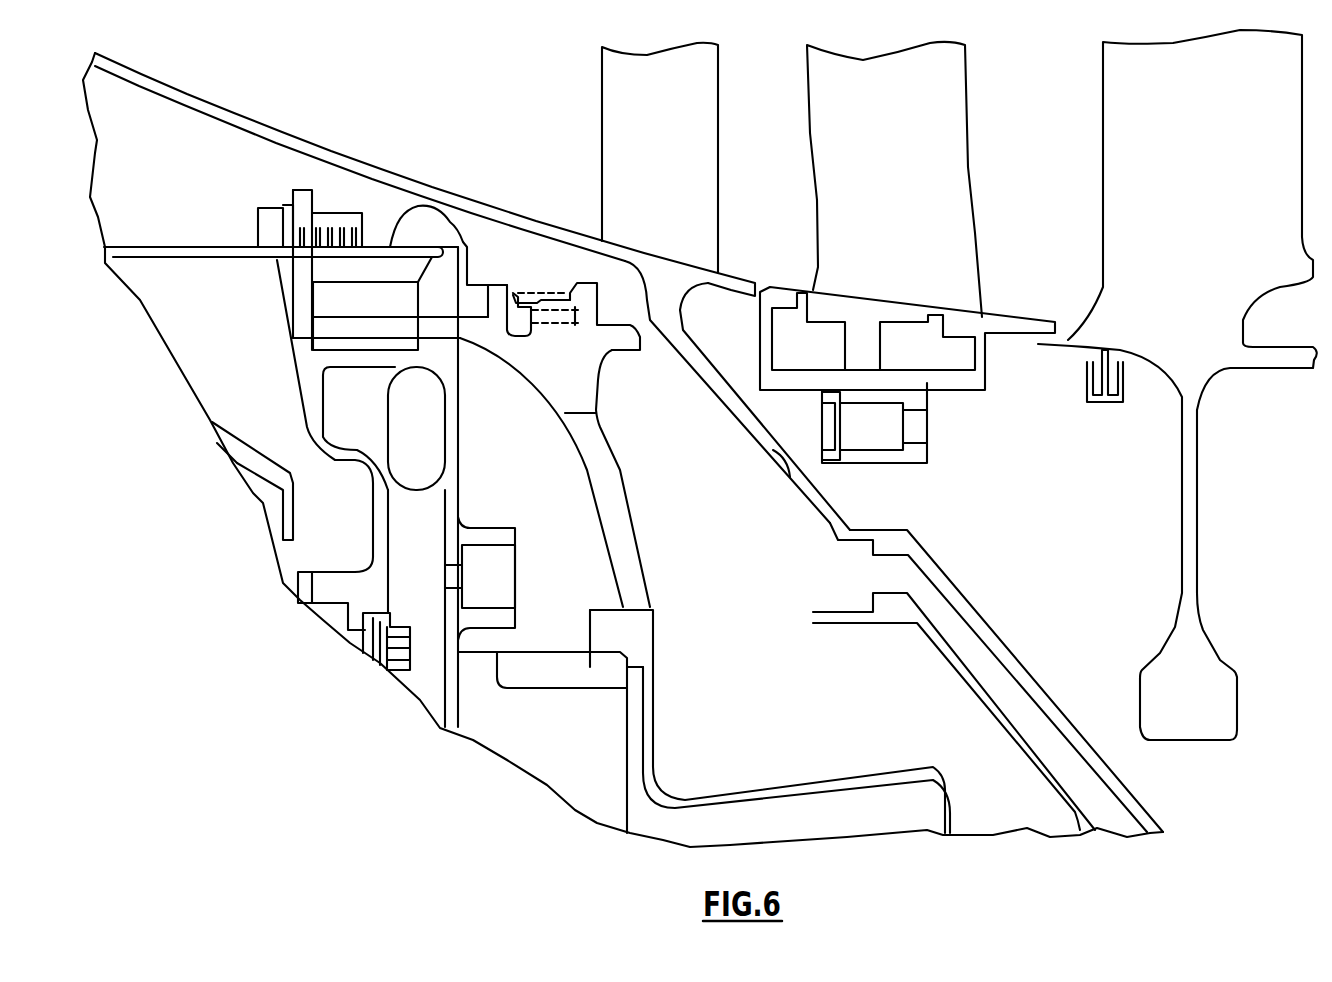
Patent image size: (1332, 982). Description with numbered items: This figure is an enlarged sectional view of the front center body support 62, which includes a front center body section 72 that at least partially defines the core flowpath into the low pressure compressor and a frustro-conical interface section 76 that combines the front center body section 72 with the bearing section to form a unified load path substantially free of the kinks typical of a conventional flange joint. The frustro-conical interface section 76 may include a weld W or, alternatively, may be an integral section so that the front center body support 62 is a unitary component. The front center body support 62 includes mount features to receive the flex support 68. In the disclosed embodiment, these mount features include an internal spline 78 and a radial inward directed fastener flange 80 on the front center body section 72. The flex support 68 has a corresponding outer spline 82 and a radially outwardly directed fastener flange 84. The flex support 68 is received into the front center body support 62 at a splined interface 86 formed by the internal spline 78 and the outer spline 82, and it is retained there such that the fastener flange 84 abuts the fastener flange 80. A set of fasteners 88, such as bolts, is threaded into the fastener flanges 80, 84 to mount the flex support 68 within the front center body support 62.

The front center body support 62 is at (483, 85).
The front center body section 72 is at (203, 98).
The frustro-conical interface section 76 is at (963, 595).
The weld W is at (792, 480).
The radially outwardly directed fastener flange 84 is at (300, 287).
The fasteners 88 is at (272, 222).
The radial inward directed fastener flange 80 is at (333, 197).
The internal spline 78 is at (523, 297).
The splined interface 86 is at (555, 292).
The outer spline 82 is at (578, 305).
The flex support 68 is at (636, 580).